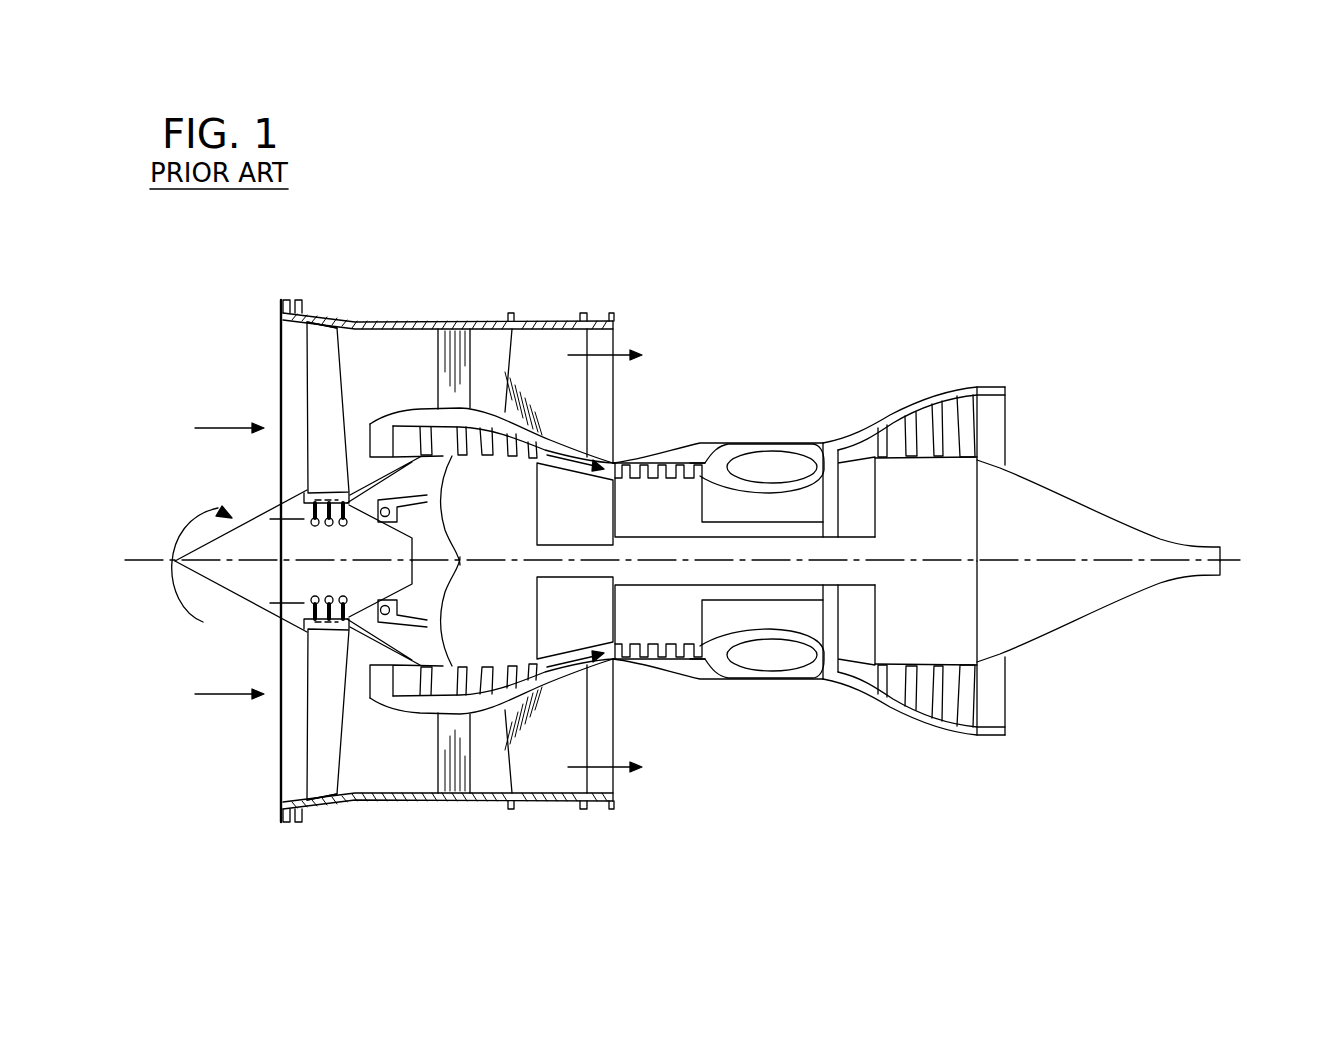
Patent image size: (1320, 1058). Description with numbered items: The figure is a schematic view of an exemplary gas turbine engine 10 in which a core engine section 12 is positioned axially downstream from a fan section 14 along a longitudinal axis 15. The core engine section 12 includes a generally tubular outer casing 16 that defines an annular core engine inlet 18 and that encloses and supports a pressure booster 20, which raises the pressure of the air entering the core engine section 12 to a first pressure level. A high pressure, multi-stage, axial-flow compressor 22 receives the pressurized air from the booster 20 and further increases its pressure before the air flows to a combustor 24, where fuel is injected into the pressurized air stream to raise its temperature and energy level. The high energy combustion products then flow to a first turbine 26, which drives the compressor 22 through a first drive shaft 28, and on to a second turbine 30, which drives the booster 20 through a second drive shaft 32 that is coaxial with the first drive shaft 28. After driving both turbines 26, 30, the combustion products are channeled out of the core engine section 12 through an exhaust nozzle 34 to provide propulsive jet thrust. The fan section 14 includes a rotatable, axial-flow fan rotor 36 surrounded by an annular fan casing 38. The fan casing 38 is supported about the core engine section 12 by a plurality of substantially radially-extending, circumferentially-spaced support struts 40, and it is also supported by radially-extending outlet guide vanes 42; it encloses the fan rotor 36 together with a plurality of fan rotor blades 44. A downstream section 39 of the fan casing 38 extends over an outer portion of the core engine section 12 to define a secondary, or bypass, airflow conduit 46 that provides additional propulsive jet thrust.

The gas turbine engine 10 is at (655, 243).
The core engine section 12 is at (770, 410).
The fan section 14 is at (316, 268).
The longitudinal axis 15 is at (1200, 558).
The outer casing 16 is at (676, 668).
The core engine inlet 18 is at (352, 688).
The pressure booster 20 is at (533, 628).
The compressor 22 is at (637, 520).
The combustor 24 is at (785, 481).
The first turbine 26 is at (829, 453).
The first drive shaft 28 is at (737, 527).
The second turbine 30 is at (960, 504).
The second drive shaft 32 is at (790, 532).
The exhaust nozzle 34 is at (1005, 403).
The fan rotor 36 is at (280, 518).
The fan casing 38 is at (394, 320).
The downstream section 39 is at (560, 320).
The support struts 40 is at (578, 388).
The outlet guide vanes 42 is at (443, 385).
The fan rotor blades 44 is at (352, 345).
The bypass airflow conduit 46 is at (496, 348).